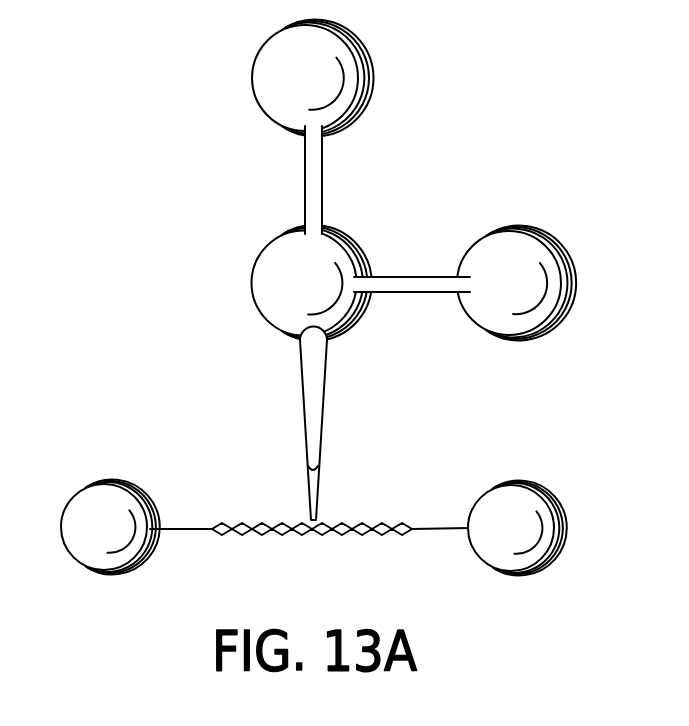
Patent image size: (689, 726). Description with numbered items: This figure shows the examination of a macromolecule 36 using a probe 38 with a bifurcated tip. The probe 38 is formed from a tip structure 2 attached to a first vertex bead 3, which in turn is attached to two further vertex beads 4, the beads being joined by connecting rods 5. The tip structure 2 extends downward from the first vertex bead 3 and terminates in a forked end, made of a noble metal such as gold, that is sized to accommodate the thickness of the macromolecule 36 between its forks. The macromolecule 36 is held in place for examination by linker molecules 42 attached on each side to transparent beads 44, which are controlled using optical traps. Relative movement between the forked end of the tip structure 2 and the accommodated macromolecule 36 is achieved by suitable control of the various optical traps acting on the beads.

The tip structure 2 is at (325, 383).
The first vertex bead 3 is at (270, 258).
The further vertex beads 4 is at (278, 45).
The connecting rod 5 is at (308, 203).
The macromolecule 36 is at (365, 527).
The probe 38 is at (318, 289).
The linker molecules 42 is at (190, 527).
The transparent beads 44 is at (82, 500).